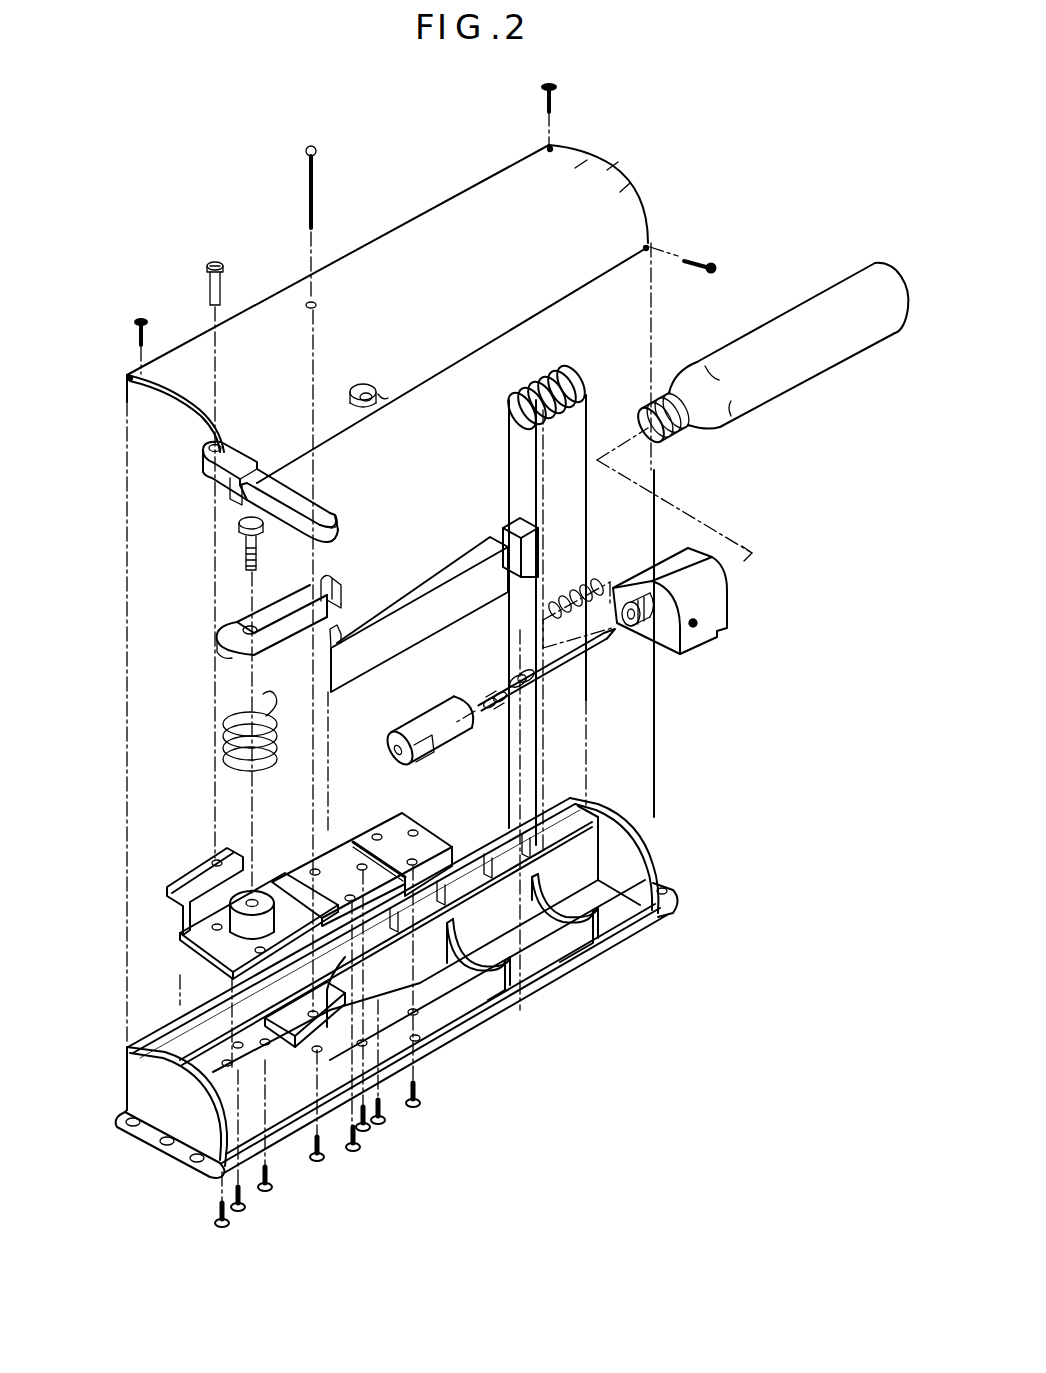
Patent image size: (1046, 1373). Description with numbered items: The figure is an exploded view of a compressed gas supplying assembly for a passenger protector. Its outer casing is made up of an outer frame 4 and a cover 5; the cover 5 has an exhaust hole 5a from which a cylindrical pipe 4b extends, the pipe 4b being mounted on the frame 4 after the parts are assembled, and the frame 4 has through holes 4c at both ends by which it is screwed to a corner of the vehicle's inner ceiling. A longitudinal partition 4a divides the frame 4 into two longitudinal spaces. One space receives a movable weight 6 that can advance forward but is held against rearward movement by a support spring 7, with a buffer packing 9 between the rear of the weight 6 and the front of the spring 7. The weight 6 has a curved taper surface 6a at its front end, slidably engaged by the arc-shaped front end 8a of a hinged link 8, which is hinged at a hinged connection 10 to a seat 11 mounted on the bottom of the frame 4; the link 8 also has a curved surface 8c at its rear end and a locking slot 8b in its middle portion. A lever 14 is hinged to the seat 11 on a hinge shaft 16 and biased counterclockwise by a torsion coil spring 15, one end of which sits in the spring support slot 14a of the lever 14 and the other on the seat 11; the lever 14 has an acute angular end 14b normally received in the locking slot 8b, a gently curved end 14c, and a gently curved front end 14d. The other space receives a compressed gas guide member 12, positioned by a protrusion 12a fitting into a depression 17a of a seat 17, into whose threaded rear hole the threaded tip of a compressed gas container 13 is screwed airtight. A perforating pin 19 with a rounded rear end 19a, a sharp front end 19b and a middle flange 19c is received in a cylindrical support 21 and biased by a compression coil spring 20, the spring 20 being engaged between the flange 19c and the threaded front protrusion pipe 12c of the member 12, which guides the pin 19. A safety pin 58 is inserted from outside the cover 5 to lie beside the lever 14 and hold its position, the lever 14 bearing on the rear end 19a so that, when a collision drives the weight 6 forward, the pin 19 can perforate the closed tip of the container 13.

The outer frame 4 is at (548, 983).
The longitudinal partition 4a is at (565, 868).
The cylindrical pipe 4b is at (372, 410).
The through holes 4c is at (188, 1160).
The cover 5 is at (392, 248).
The exhaust hole 5a is at (382, 398).
The movable weight 6 is at (458, 553).
The curved taper surface 6a is at (333, 637).
The support spring 7 is at (542, 388).
The hinged link 8 is at (290, 485).
The arc-shaped front end 8a is at (323, 523).
The locking slot 8b is at (262, 470).
The curved surface 8c is at (207, 467).
The buffer packing 9 is at (515, 528).
The hinged connection 10 is at (208, 279).
The seat 11 is at (190, 882).
The compressed gas guide member 12 is at (732, 598).
The protrusion 12a is at (693, 653).
The outer threaded front protrusion pipe 12c is at (650, 632).
The compressed gas container 13 is at (789, 340).
The lever 14 is at (248, 601).
The spring support slot 14a is at (327, 577).
The acute angular end 14b is at (340, 590).
The gently curved end 14c is at (345, 623).
The gently curved front end 14d is at (220, 647).
The torsion coil spring 15 is at (225, 755).
The hinge shaft 16 is at (240, 533).
The seat 17 is at (400, 840).
The depression 17a is at (352, 860).
The perforating pin 19 is at (563, 672).
The rounded rear end 19a is at (492, 697).
The sharp front end 19b is at (597, 637).
The middle flange 19c is at (513, 687).
The compression coil spring 20 is at (571, 590).
The cylindrical support 21 is at (425, 727).
The safety pin 58 is at (306, 196).